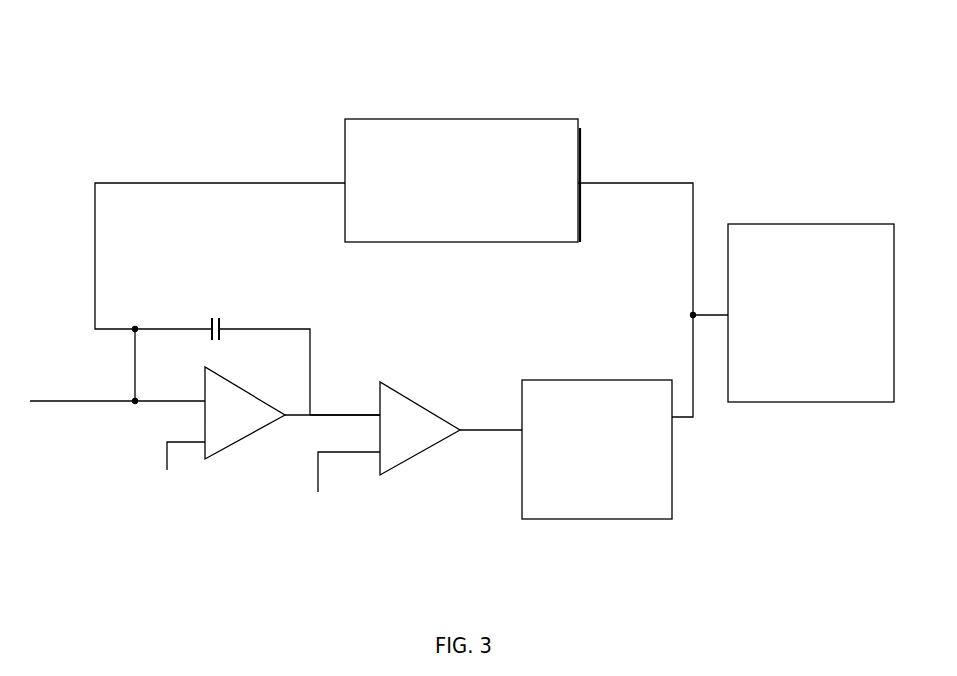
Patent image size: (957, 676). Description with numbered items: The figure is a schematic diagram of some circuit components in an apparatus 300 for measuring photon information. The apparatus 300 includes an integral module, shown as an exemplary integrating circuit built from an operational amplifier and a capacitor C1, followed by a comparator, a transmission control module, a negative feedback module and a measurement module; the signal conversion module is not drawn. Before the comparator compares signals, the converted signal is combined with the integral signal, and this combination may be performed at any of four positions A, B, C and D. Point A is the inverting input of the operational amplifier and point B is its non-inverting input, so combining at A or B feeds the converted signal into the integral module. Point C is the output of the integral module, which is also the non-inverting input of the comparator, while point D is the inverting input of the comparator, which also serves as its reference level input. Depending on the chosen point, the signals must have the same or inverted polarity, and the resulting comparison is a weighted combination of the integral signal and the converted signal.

The apparatus for measuring photon information 300 is at (636, 64).
The inverting input of the operational amplifier A is at (118, 367).
The non-inverting input of the operational amplifier B is at (167, 468).
The output of the integral module C is at (358, 403).
The inverting input of the comparator D is at (318, 490).
The capacitor C1 is at (214, 316).